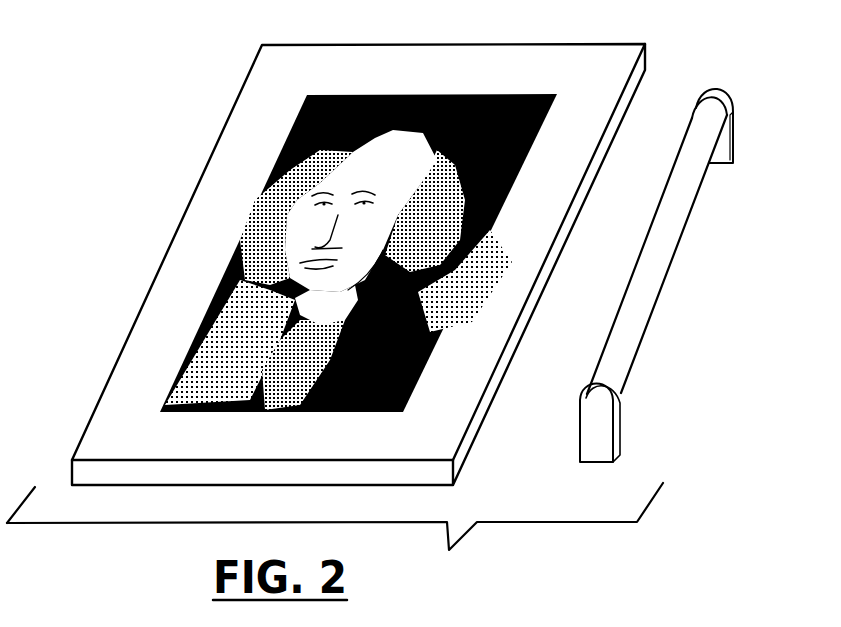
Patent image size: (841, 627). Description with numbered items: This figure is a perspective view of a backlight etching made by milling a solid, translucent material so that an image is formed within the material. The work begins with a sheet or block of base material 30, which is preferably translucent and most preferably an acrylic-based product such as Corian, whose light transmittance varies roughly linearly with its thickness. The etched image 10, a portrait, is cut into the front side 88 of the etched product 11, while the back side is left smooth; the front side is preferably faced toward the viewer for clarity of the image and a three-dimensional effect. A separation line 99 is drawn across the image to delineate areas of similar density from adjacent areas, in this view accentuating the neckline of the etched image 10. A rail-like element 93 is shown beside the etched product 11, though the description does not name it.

The etched image 10 is at (304, 253).
The etched product 11 is at (335, 533).
The base material 30 is at (168, 310).
The front side 88 is at (137, 419).
The guide rail 93 is at (615, 375).
The separation line 99 is at (397, 310).